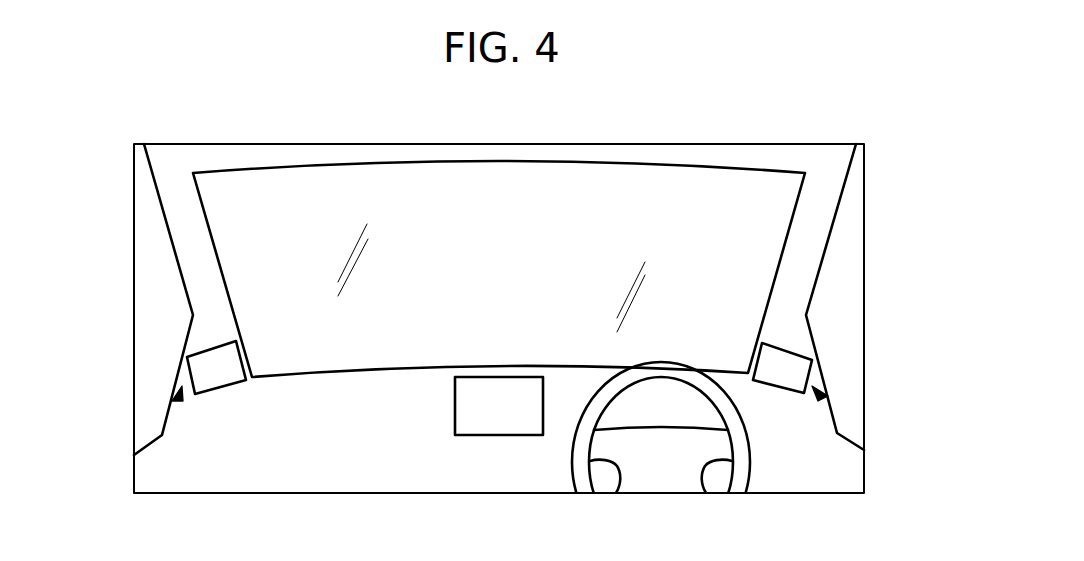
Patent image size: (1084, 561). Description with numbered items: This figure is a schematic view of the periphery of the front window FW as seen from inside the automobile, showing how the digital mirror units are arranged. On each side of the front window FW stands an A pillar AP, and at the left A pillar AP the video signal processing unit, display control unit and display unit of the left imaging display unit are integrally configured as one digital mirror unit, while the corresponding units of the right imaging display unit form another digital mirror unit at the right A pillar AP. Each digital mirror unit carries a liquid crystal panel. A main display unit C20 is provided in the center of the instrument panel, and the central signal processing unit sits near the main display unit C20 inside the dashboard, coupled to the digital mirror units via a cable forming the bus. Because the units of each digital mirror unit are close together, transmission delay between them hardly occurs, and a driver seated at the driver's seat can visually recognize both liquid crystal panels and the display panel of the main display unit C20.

The front window FW is at (633, 183).
The A pillar AP is at (180, 230).
The main display unit C20 is at (502, 435).